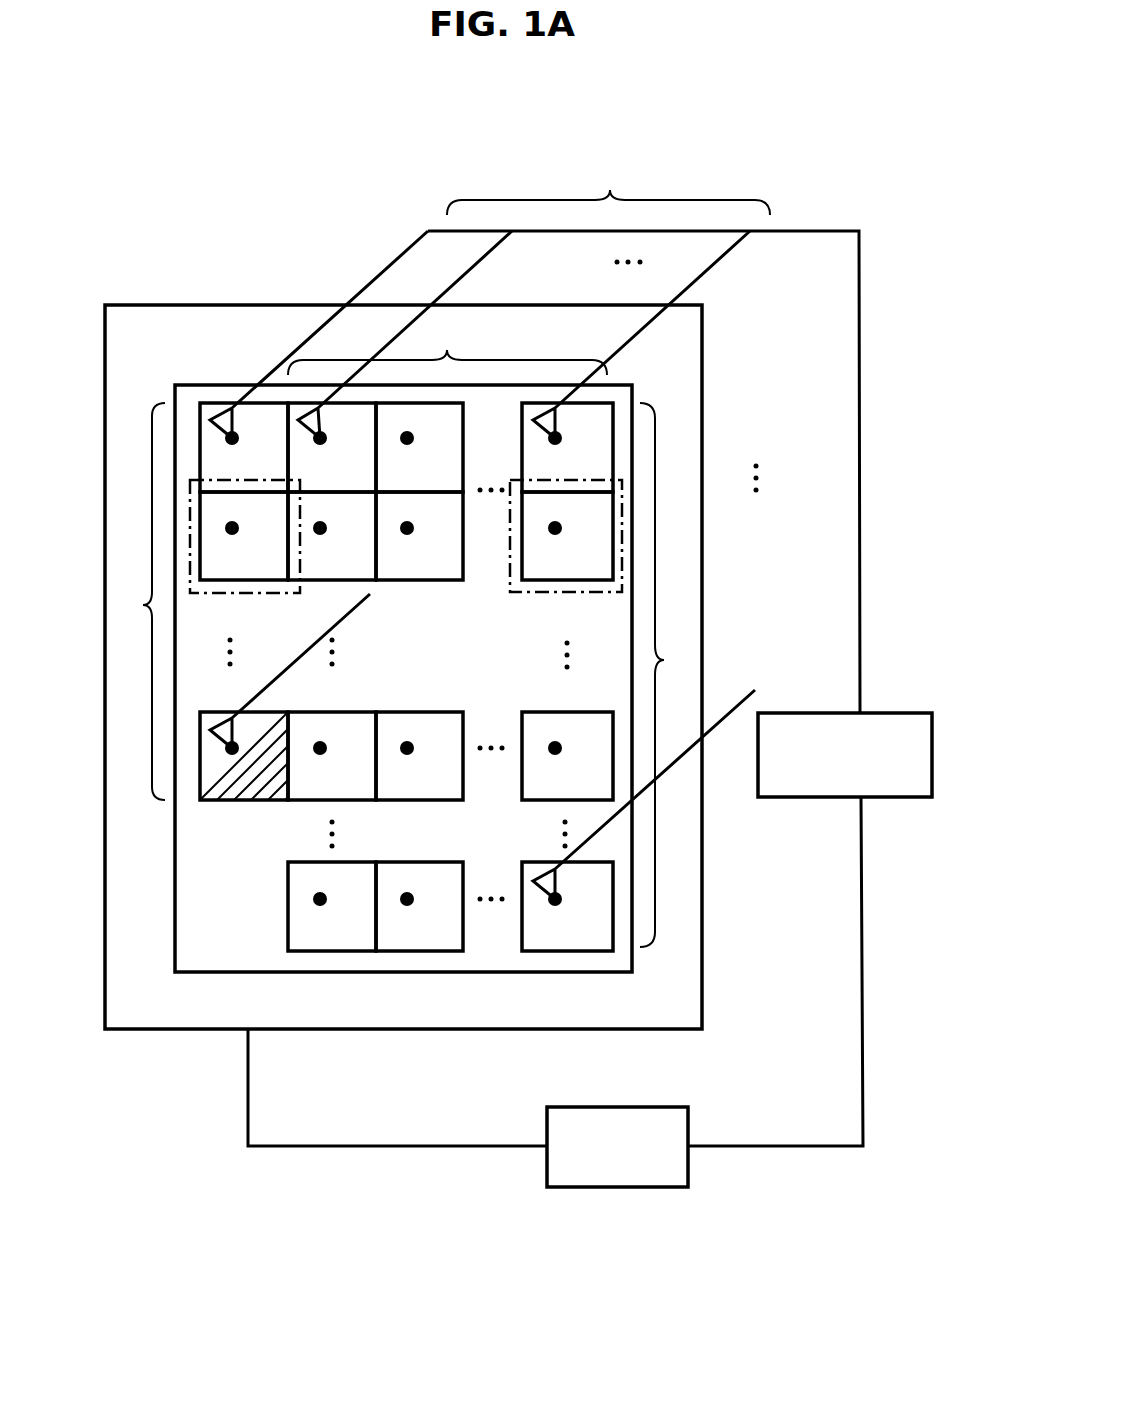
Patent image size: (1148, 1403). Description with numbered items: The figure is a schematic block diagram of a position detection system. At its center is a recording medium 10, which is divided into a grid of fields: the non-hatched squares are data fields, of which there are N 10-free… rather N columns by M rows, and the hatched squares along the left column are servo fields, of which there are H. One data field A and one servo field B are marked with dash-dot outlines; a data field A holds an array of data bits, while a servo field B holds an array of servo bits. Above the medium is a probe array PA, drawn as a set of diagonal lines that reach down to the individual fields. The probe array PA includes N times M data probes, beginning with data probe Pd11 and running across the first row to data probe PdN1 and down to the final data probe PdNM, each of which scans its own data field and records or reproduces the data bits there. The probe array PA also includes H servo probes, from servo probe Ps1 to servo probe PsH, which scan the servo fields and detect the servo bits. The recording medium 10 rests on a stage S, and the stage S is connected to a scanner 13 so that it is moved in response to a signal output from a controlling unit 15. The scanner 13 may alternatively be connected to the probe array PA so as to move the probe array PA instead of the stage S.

The recording medium 10 is at (203, 910).
The scanner 13 is at (645, 1107).
The controlling unit 15 is at (875, 713).
The stage S is at (125, 990).
The data field A is at (622, 533).
The servo field B is at (190, 500).
The probe array PA is at (608, 189).
The number of data field columns N is at (447, 350).
The number of data field rows M is at (667, 675).
The number of servo fields H is at (140, 601).
The servo probe Ps1 is at (398, 265).
The data probe Pd11 is at (480, 264).
The data probe PdN1 is at (719, 262).
The servo probe PsH is at (263, 690).
The data probe PdNM is at (598, 830).